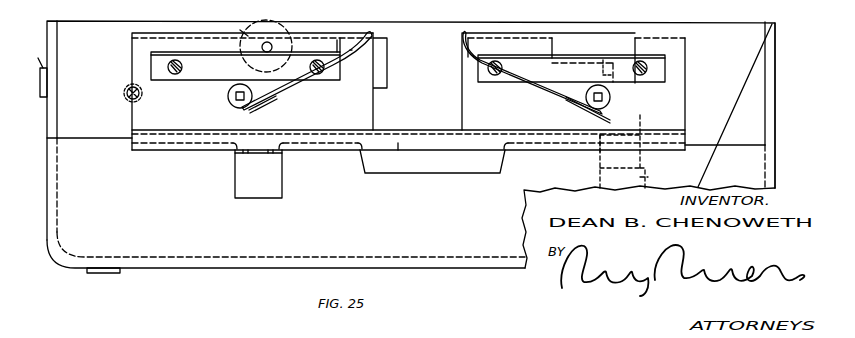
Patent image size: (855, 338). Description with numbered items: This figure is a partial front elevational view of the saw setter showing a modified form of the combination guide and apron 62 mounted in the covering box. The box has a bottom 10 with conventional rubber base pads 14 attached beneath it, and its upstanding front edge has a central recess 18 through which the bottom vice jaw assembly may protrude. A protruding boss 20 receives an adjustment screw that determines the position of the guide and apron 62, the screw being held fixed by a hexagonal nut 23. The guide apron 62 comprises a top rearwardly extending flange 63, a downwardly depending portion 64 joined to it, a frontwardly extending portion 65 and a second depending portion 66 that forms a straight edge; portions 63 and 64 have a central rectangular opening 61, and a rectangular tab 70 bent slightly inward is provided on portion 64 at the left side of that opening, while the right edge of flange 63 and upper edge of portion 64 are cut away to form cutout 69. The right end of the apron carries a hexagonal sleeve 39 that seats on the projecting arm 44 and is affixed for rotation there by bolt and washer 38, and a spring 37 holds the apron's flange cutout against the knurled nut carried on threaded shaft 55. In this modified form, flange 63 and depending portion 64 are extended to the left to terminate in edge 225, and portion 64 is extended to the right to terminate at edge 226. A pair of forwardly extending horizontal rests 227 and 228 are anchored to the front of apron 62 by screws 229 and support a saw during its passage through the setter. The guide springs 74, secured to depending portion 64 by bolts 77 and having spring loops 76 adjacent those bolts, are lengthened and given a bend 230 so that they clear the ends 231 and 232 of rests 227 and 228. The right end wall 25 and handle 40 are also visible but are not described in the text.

The bottom 10 is at (178, 268).
The base pads 14 is at (105, 273).
The central recess 18 is at (475, 174).
The protruding boss 20 is at (268, 196).
The hexagonal nut 23 is at (272, 154).
The end wall 25 is at (778, 91).
The spring 37 is at (127, 92).
The bolt and washer 38 is at (605, 60).
The hexagonal sleeve 39 is at (265, 42).
The handle 40 is at (44, 68).
The projecting arm 44 is at (645, 166).
The threaded shaft 55 is at (245, 36).
The central rectangular opening 61 is at (462, 98).
The combination guide and apron 62 is at (125, 136).
The top rearwardly extending flange 63 is at (197, 35).
The downwardly depending portion 64 is at (135, 61).
The frontwardly extending portion 65 is at (432, 130).
The second depending portion 66 is at (400, 144).
The cutout 69 is at (570, 58).
The rectangular tab 70 is at (385, 55).
The springs 74 is at (288, 92).
The spring loops 76 is at (259, 108).
The bolts 77 is at (238, 100).
The edge 225 is at (132, 116).
The edge 226 is at (686, 97).
The horizontal rest 227 is at (205, 76).
The horizontal rest 228 is at (548, 74).
The screws 229 is at (175, 76).
The bend 230 is at (353, 58).
The end 231 is at (339, 40).
The end 232 is at (474, 57).